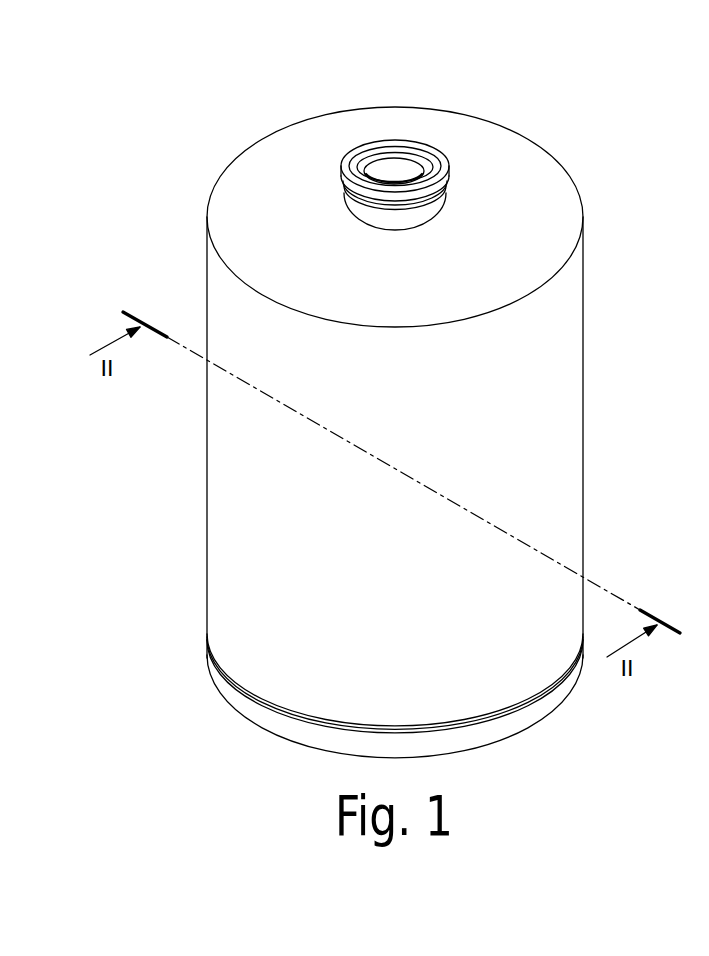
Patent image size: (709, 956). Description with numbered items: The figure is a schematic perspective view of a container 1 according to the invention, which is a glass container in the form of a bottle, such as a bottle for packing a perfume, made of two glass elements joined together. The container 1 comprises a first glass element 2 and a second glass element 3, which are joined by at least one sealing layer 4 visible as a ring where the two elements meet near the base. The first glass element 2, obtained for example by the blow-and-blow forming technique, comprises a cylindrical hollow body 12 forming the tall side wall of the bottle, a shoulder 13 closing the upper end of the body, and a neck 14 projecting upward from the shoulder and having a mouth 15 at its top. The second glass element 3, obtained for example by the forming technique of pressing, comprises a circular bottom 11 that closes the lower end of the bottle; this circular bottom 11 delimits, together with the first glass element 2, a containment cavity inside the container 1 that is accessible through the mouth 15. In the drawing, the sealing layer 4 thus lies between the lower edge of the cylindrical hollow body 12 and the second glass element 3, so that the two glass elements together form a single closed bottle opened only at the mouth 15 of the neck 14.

The container 1 is at (638, 150).
The first glass element 2 is at (585, 282).
The second glass element 3 is at (568, 695).
The sealing layer 4 is at (237, 680).
The circular bottom 11 is at (485, 735).
The cylindrical hollow body 12 is at (550, 463).
The shoulder 13 is at (508, 155).
The neck 14 is at (367, 218).
The mouth 15 is at (385, 168).